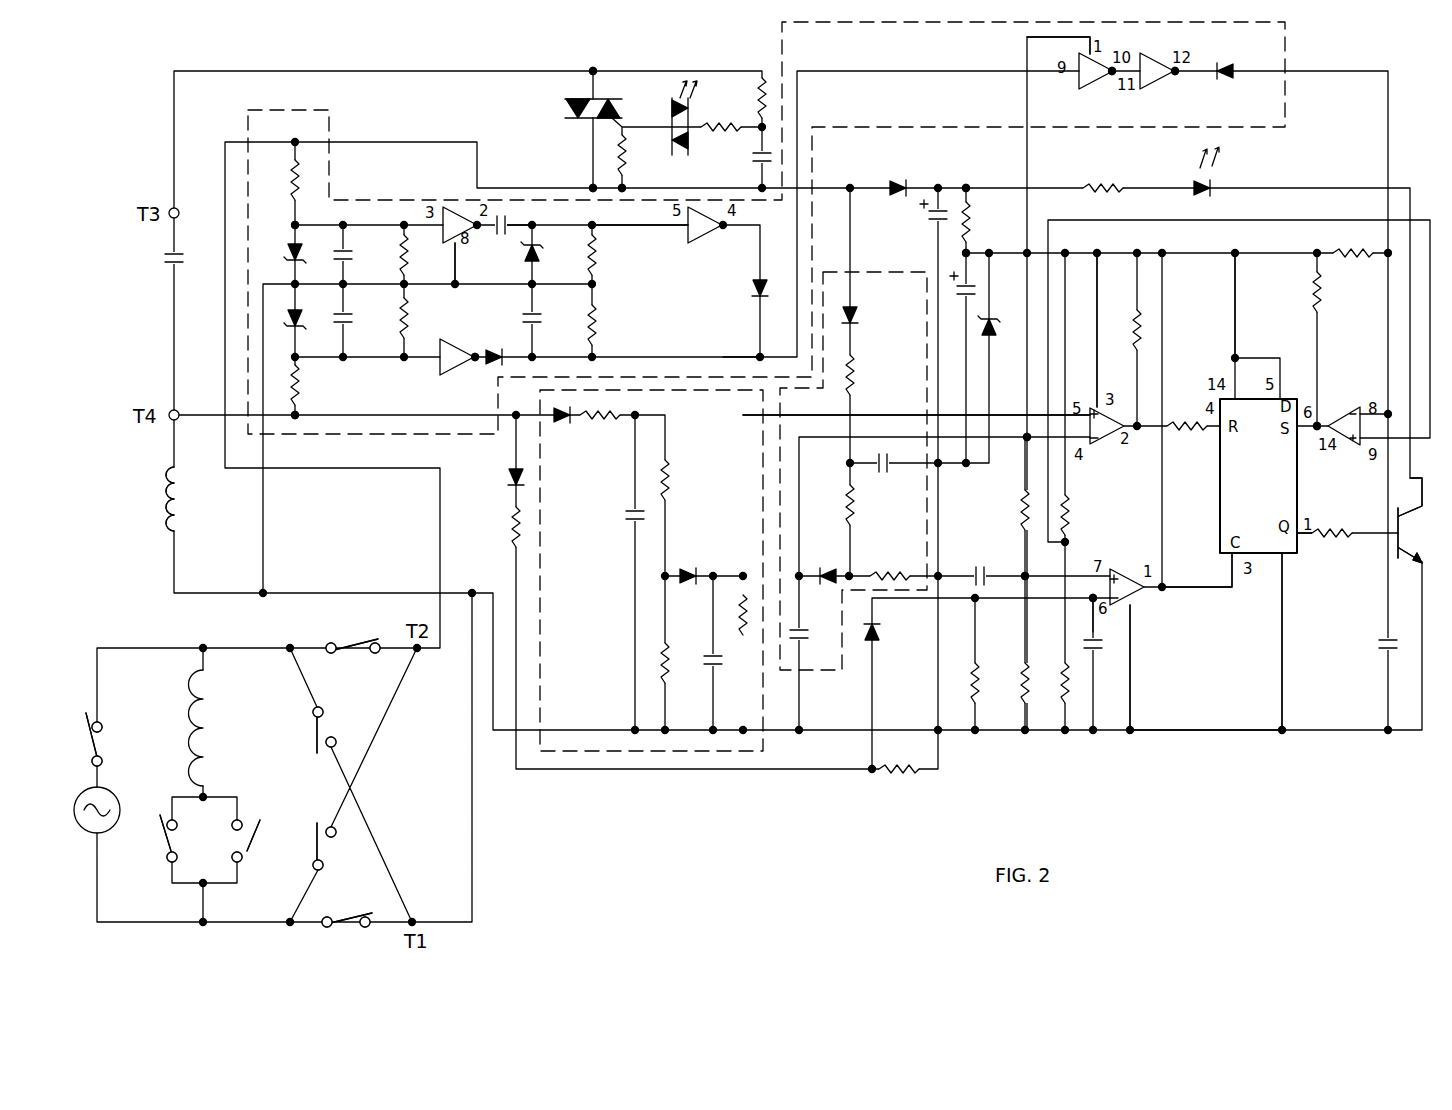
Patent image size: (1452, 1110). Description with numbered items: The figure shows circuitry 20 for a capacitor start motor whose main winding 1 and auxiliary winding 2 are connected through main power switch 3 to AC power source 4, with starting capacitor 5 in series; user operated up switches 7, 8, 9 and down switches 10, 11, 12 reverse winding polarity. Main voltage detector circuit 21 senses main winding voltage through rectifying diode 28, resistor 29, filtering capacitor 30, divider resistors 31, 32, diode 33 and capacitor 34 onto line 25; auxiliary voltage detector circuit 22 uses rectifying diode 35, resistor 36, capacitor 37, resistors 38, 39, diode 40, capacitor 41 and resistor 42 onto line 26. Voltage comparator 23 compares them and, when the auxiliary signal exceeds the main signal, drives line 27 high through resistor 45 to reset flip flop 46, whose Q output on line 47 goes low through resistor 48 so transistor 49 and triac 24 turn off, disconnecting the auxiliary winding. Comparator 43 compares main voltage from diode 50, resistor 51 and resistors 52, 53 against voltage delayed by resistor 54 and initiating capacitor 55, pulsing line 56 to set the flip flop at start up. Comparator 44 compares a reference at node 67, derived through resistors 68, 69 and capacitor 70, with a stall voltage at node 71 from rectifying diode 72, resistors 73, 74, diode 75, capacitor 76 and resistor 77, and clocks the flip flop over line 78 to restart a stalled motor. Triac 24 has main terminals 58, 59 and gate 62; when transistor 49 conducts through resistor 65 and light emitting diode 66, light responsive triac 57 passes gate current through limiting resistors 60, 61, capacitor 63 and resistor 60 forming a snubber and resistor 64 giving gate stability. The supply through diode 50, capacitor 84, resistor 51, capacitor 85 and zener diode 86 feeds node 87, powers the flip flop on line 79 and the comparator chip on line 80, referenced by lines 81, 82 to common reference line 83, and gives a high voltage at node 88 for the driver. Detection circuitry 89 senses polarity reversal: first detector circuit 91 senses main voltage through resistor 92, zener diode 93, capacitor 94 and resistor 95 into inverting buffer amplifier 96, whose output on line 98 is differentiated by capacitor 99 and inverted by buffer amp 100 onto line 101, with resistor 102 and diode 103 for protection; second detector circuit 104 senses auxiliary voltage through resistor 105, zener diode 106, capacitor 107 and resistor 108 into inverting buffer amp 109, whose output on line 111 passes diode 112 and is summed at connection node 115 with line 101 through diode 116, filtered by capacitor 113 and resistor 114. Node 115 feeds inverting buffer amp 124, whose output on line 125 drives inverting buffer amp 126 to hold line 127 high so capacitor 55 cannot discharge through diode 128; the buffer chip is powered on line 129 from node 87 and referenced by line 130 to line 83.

The main winding 1 is at (210, 736).
The auxiliary winding 2 is at (161, 497).
The main power switch 3 is at (84, 741).
The AC power source 4 is at (78, 799).
The capacitor 5 is at (163, 259).
The up switch 7 is at (355, 645).
The up switch 8 is at (348, 920).
The up switch 9 is at (162, 849).
The down switch 10 is at (311, 716).
The down switch 11 is at (313, 836).
The down switch 12 is at (251, 841).
The circuitry 20 is at (466, 53).
The main voltage detector circuit 21 is at (925, 375).
The auxiliary voltage detector circuit 22 is at (610, 752).
The voltage comparator 23 is at (1110, 441).
The triac 24 is at (565, 105).
The line 25 is at (1026, 436).
The line 26 is at (1012, 413).
The line 27 is at (1138, 360).
The rectifying diode 28 is at (858, 316).
The resistor 29 is at (858, 381).
The filtering capacitor 30 is at (880, 473).
The resistor 31 is at (844, 496).
The resistor 32 is at (895, 570).
The diode 33 is at (828, 566).
The capacitor 34 is at (809, 632).
The rectifying diode 35 is at (561, 426).
The resistor 36 is at (605, 425).
The filtering capacitor 37 is at (623, 515).
The resistor 38 is at (672, 481).
The resistor 39 is at (672, 676).
The diode 40 is at (689, 561).
The filtering capacitor 41 is at (701, 660).
The resistor 42 is at (739, 619).
The comparator 43 is at (1346, 407).
The comparator 44 is at (1125, 568).
The resistor 45 is at (1185, 412).
The flip flop 46 is at (1220, 481).
The line 47 is at (1303, 539).
The resistor 48 is at (1350, 540).
The transistor 49 is at (1408, 501).
The diode 50 is at (900, 180).
The resistor 51 is at (972, 218).
The resistor 52 is at (1070, 510).
The resistor 53 is at (1058, 670).
The resistor 54 is at (1349, 262).
The initiating capacitor 55 is at (1378, 641).
The line 56 is at (1318, 431).
The light responsive triac 57 is at (668, 108).
The triac main terminal 58 is at (591, 68).
The triac main terminal 59 is at (590, 185).
The limiting resistor 60 is at (762, 78).
The limiting resistor 61 is at (730, 123).
The gate 62 is at (619, 140).
The capacitor 63 is at (755, 158).
The resistor 64 is at (628, 174).
The resistor 65 is at (1105, 178).
The light emitting diode 66 is at (1210, 198).
The node 67 is at (1023, 570).
The resistor 68 is at (1020, 500).
The resistor 69 is at (1018, 670).
The capacitor 70 is at (980, 562).
The node 71 is at (1090, 633).
The rectifying diode 72 is at (506, 475).
The resistor 73 is at (506, 527).
The resistor 74 is at (901, 778).
The diode 75 is at (877, 638).
The filtering capacitor 76 is at (1103, 648).
The resistor 77 is at (970, 670).
The line 78 is at (1210, 589).
The line 79 is at (1232, 286).
The line 80 is at (1098, 300).
The line 81 is at (1280, 694).
The line 82 is at (1135, 698).
The common reference line 83 is at (1186, 734).
The capacitor 84 is at (928, 216).
The capacitor 85 is at (958, 291).
The zener diode 86 is at (995, 321).
The node 87 is at (968, 250).
The node 88 is at (966, 185).
The detection circuitry 89 is at (403, 196).
The first detector circuit 91 is at (288, 215).
The resistor 92 is at (289, 178).
The zener diode 93 is at (286, 253).
The capacitor 94 is at (347, 256).
The resistor 95 is at (408, 256).
The inverting buffer amplifier 96 is at (470, 205).
The line 98 is at (500, 235).
The capacitor 99 is at (510, 223).
The buffer amp 100 is at (688, 232).
The line 101 is at (740, 229).
The resistor 102 is at (598, 255).
The diode 103 is at (538, 259).
The second detector circuit 104 is at (306, 386).
The resistor 105 is at (302, 398).
The zener diode 106 is at (310, 320).
The capacitor 107 is at (349, 318).
The resistor 108 is at (412, 315).
The inverting buffer amp 109 is at (476, 337).
The line 111 is at (500, 348).
The diode 112 is at (475, 366).
The capacitor 113 is at (527, 315).
The resistor 114 is at (598, 325).
The connection node 115 is at (757, 355).
The diode 116 is at (750, 288).
The inverting buffer amp 124 is at (1076, 88).
The line 125 is at (1112, 80).
The inverting buffer amp 126 is at (1150, 55).
The line 127 is at (1178, 80).
The diode 128 is at (1225, 62).
The line 129 is at (1027, 48).
The line 130 is at (460, 266).